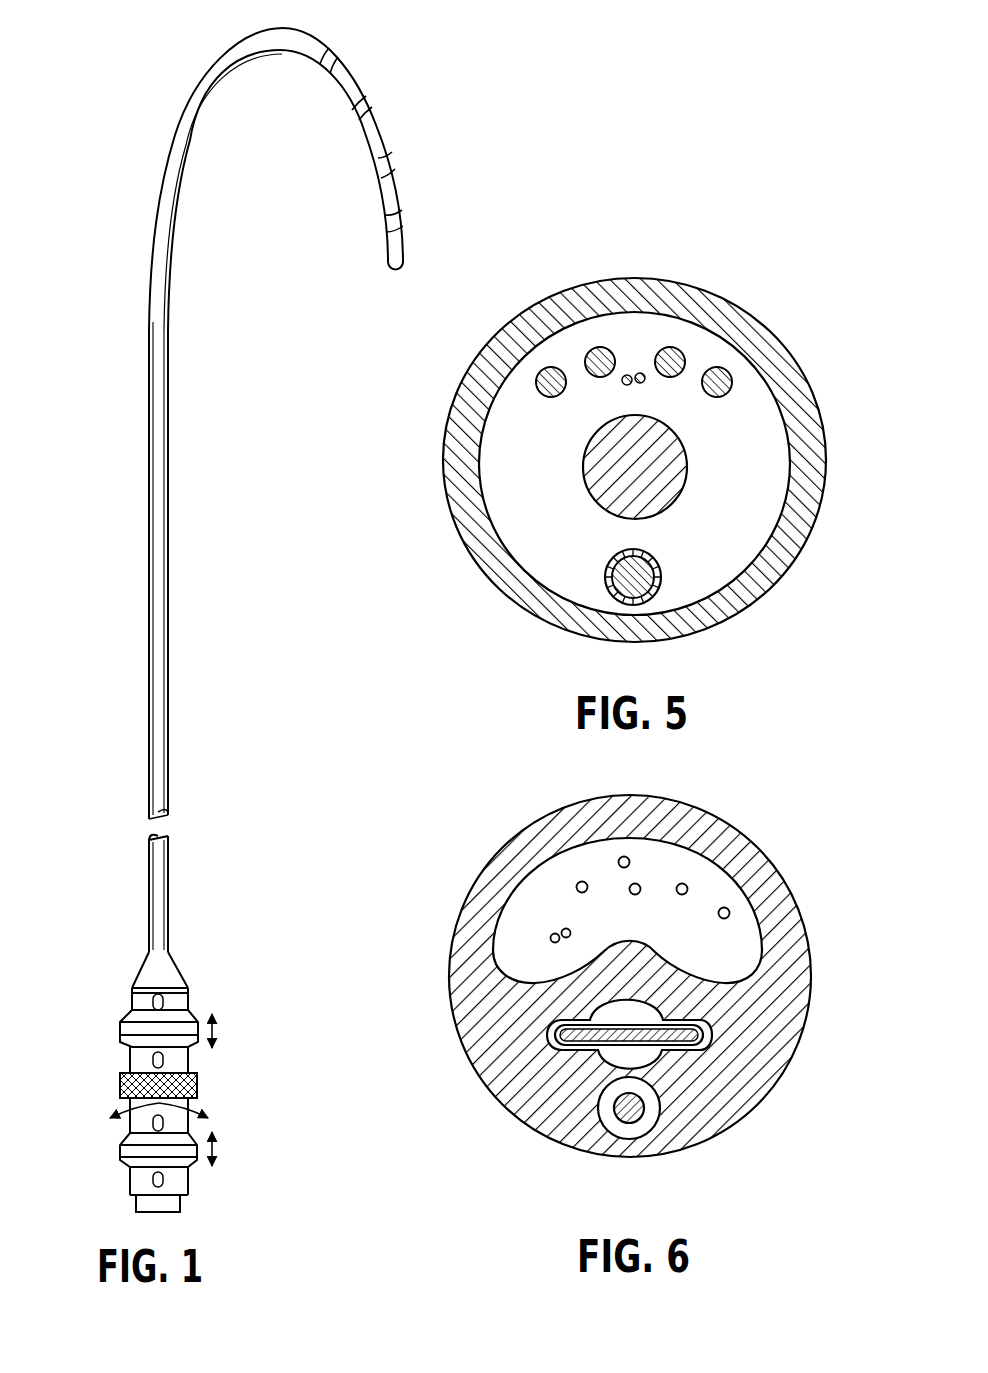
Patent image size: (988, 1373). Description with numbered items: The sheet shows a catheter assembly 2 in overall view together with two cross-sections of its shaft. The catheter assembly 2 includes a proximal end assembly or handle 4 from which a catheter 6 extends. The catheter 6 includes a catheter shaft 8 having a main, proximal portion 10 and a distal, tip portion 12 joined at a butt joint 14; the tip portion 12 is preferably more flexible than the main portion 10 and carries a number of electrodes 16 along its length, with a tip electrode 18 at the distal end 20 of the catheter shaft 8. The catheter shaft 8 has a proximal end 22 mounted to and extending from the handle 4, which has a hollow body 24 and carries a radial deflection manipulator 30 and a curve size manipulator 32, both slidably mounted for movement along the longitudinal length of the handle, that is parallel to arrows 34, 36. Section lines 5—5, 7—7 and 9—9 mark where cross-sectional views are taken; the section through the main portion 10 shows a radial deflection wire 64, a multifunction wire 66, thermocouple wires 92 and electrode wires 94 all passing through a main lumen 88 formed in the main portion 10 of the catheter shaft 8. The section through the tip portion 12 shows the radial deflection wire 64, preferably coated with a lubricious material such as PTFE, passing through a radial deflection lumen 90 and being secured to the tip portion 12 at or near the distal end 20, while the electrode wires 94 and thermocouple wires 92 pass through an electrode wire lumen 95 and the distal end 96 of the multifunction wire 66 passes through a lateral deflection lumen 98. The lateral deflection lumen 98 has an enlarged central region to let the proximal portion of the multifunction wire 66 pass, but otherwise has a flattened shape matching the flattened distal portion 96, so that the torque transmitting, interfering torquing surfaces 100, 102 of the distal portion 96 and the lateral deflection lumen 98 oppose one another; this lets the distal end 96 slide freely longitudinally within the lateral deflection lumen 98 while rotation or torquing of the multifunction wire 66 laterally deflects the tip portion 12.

In FIG. 1, the catheter assembly 2 is at (397, 28).
In FIG. 1, the handle 4 is at (211, 984).
In FIG. 1, the section line 5— 5 is at (128, 385).
In FIG. 1, the catheter 6 is at (210, 537).
In FIG. 1, the section line 7- 7 is at (83, 1150).
In FIG. 1, the catheter shaft 8 is at (172, 632).
In FIG. 1, the section line 9- 9 is at (108, 1085).
In FIG. 1, the main, proximal portion 10 is at (170, 469).
In FIG. 5, the main, proximal portion 10 is at (800, 364).
In FIG. 1, the distal, tip portion 12 is at (370, 88).
In FIG. 6, the distal, tip portion 12 is at (803, 909).
In FIG. 1, the butt joint 14 is at (162, 278).
In FIG. 1, the electrodes 16 is at (390, 153).
In FIG. 1, the tip electrode 18 is at (404, 264).
In FIG. 1, the distal end 20 is at (387, 242).
In FIG. 1, the proximal end 22 is at (160, 935).
In FIG. 1, the hollow body 24 is at (190, 1060).
In FIG. 1, the radial deflection manipulator 30 is at (126, 1030).
In FIG. 1, the curve size manipulator 32 is at (120, 1150).
In FIG. 1, the arrow 34 is at (217, 1030).
In FIG. 1, the arrow 36 is at (216, 1152).
In FIG. 5, the radial deflection wire 64 is at (650, 578).
In FIG. 6, the radial deflection wire 64 is at (640, 1118).
In FIG. 5, the multifunction wire 66 is at (687, 480).
In FIG. 6, the multifunction wire 66 is at (633, 1052).
In FIG. 5, the main lumen 88 is at (736, 536).
In FIG. 6, the radial deflection lumen 90 is at (611, 1122).
In FIG. 5, the thermocouple wires 92 is at (644, 374).
In FIG. 6, the thermocouple wires 92 is at (551, 934).
In FIG. 5, the electrode wires 94 is at (678, 356).
In FIG. 6, the electrode wires 94 is at (627, 858).
In FIG. 6, the electrode wire lumen 95 is at (718, 886).
In FIG. 6, the distal end of multifunction wire 96 is at (629, 1034).
In FIG. 6, the lateral deflection lumen 98 is at (652, 1128).
In FIG. 6, the torquing surface 100 is at (600, 1070).
In FIG. 6, the torquing surface 102 is at (573, 1019).